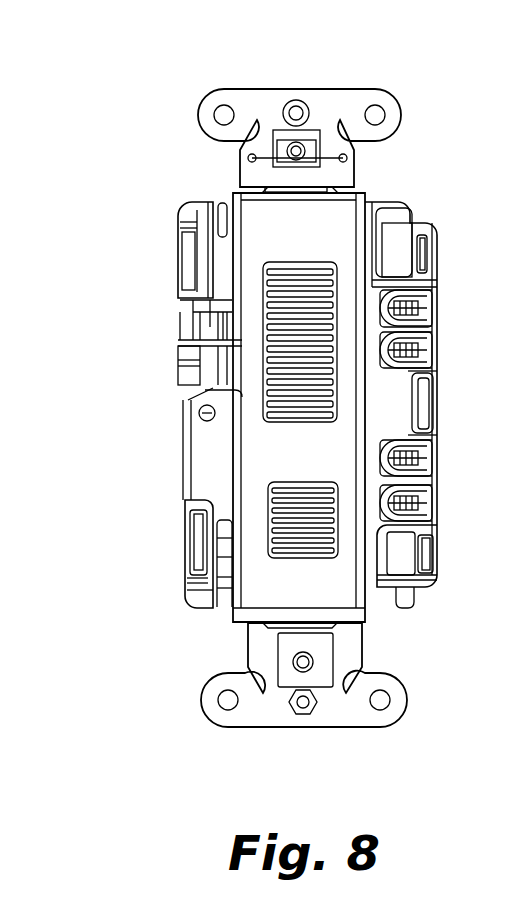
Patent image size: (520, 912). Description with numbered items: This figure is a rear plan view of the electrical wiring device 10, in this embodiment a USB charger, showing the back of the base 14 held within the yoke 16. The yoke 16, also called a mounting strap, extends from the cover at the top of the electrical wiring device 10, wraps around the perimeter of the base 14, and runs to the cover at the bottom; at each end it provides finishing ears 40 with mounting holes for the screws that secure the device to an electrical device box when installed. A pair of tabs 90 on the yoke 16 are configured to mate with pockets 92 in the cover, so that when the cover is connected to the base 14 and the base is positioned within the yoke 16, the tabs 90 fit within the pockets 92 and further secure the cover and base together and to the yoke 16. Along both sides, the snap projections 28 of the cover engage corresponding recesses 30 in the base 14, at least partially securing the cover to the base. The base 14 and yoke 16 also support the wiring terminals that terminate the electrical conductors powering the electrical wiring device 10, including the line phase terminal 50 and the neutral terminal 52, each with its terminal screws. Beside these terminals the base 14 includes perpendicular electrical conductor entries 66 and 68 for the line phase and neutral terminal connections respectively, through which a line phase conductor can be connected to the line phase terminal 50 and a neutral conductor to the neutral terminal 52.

The electrical wiring device 10 is at (132, 120).
The base 14 is at (208, 436).
The yoke 16 is at (262, 585).
The snap projections 28 is at (188, 268).
The recesses 30 is at (190, 222).
The finishing ears 40 is at (332, 100).
The line phase terminal 50 is at (422, 468).
The neutral terminal 52 is at (422, 352).
The perpendicular electrical conductor entries 66 is at (413, 310).
The perpendicular electrical conductor entries 68 is at (413, 467).
The tabs 90 is at (300, 194).
The pockets 92 is at (323, 185).